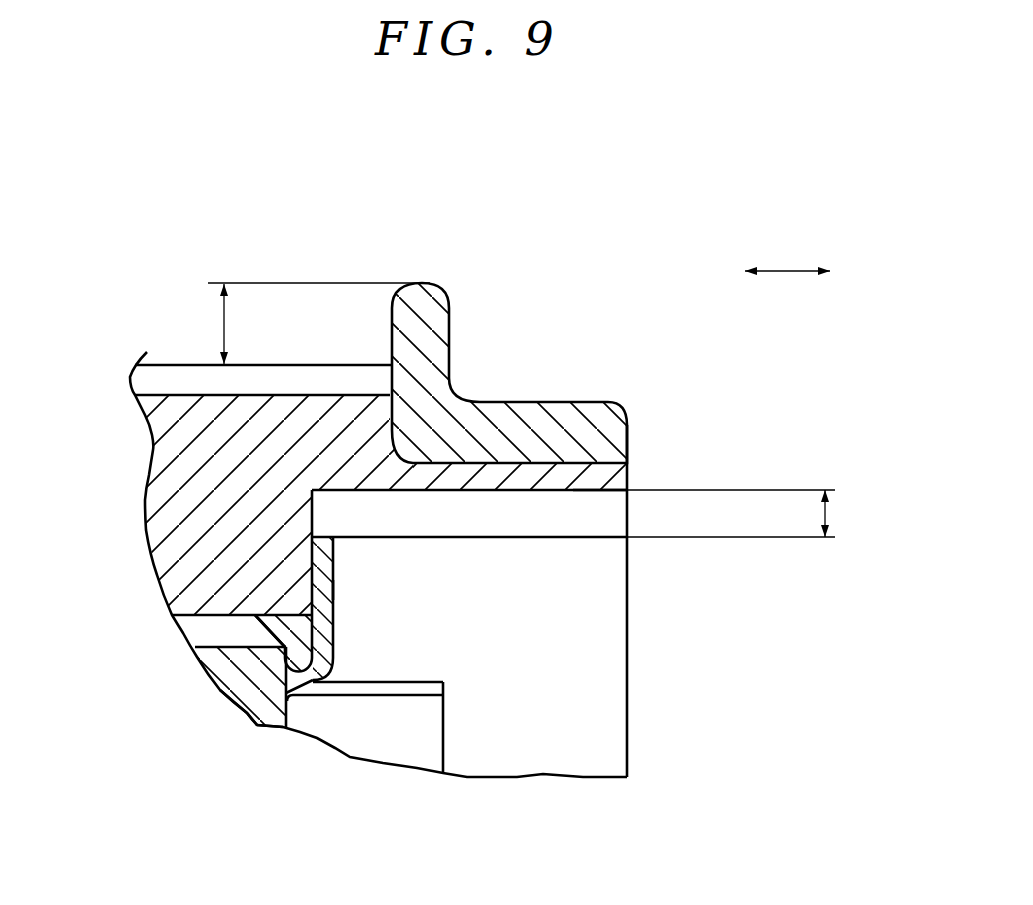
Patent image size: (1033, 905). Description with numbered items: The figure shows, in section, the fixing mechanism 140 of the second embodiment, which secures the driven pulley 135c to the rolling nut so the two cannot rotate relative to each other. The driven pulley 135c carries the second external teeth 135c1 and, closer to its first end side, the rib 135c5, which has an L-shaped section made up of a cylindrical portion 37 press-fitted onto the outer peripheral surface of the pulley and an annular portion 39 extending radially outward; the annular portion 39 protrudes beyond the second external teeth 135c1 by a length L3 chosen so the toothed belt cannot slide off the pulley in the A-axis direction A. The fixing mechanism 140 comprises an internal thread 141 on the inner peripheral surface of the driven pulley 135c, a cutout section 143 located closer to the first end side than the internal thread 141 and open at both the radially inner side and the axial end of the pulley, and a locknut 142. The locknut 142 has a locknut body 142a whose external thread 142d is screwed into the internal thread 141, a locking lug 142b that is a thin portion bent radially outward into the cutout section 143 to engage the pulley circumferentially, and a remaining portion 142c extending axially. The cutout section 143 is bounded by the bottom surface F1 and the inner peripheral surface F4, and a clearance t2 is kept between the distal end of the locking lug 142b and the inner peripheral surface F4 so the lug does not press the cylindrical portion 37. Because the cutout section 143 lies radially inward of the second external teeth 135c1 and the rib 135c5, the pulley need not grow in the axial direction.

The cylindrical portion 37 is at (568, 420).
The annular portion 39 is at (438, 323).
The cutout section 143 is at (372, 520).
The driven pulley 135c is at (217, 542).
The second external teeth 135c1 is at (215, 380).
The rib 135c5 is at (628, 416).
The fixing mechanism 140 is at (672, 607).
The internal thread 141 is at (282, 622).
The locknut 142 is at (248, 690).
The locknut body 142a is at (260, 705).
The locking lug 142b is at (325, 560).
The remaining portion 142c is at (423, 735).
The external thread 142d is at (258, 631).
The bottom surface F1 is at (318, 589).
The inner peripheral surface F4 is at (573, 493).
The length L3 is at (308, 323).
The clearance t2 is at (742, 513).
The A-axis direction A is at (787, 259).